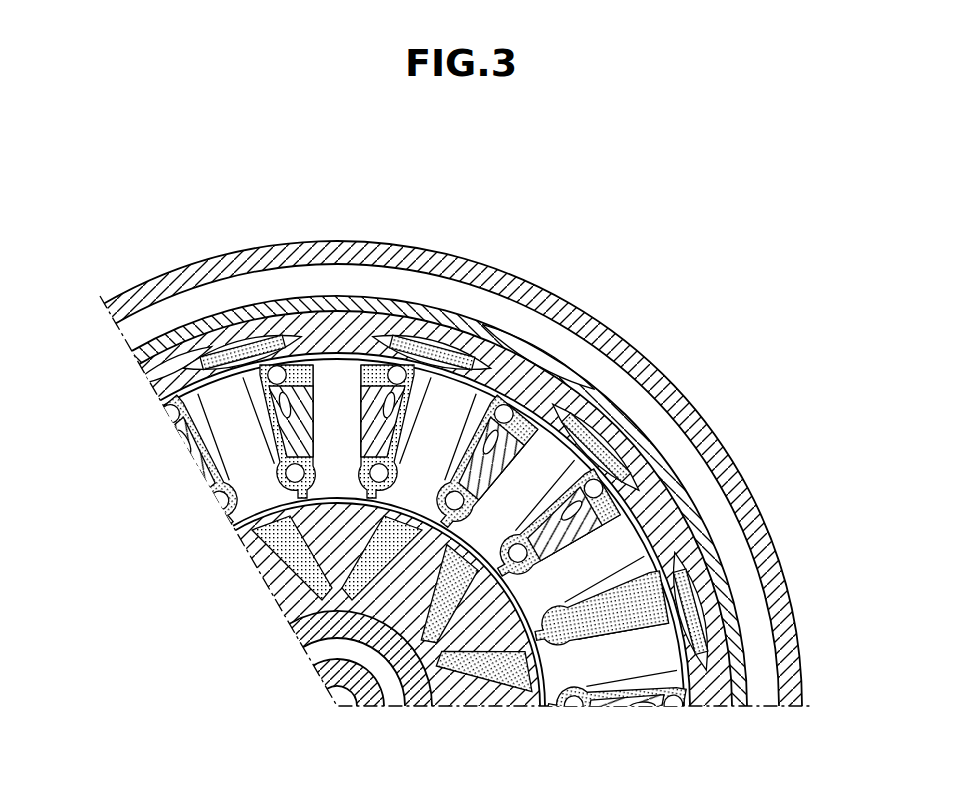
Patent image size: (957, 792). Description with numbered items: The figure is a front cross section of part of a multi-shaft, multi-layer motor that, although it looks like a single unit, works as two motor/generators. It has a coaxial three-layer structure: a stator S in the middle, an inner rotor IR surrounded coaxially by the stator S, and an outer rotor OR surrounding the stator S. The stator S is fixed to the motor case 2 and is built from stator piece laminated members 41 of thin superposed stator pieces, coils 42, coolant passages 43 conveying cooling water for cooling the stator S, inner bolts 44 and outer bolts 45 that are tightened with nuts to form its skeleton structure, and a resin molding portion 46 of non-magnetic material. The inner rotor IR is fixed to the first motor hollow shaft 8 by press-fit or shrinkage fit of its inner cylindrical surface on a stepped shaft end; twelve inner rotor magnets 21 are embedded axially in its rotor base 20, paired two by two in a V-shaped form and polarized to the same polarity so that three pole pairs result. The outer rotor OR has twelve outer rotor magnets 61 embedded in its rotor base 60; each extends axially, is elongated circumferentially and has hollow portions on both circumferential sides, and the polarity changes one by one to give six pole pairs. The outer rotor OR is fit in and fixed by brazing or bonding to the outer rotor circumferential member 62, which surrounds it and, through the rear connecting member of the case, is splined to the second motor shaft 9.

The motor case 2 is at (106, 316).
The outer rotor OR is at (457, 505).
The stator S is at (410, 506).
The inner rotor IR is at (386, 636).
The first motor hollow shaft 8 is at (292, 640).
The second motor shaft 9 is at (321, 682).
The rotor base 20 is at (478, 707).
The inner rotor magnets 21 is at (460, 586).
The stator piece laminated members 41 is at (545, 435).
The coils 42 is at (537, 452).
The coolant passages 43 is at (574, 516).
The inner bolts 44 is at (509, 545).
The outer bolts 45 is at (583, 489).
The resin molding portion 46 is at (598, 617).
The rotor base 60 is at (682, 514).
The outer rotor magnets 61 is at (702, 611).
The outer rotor circumferential member 62 is at (748, 707).